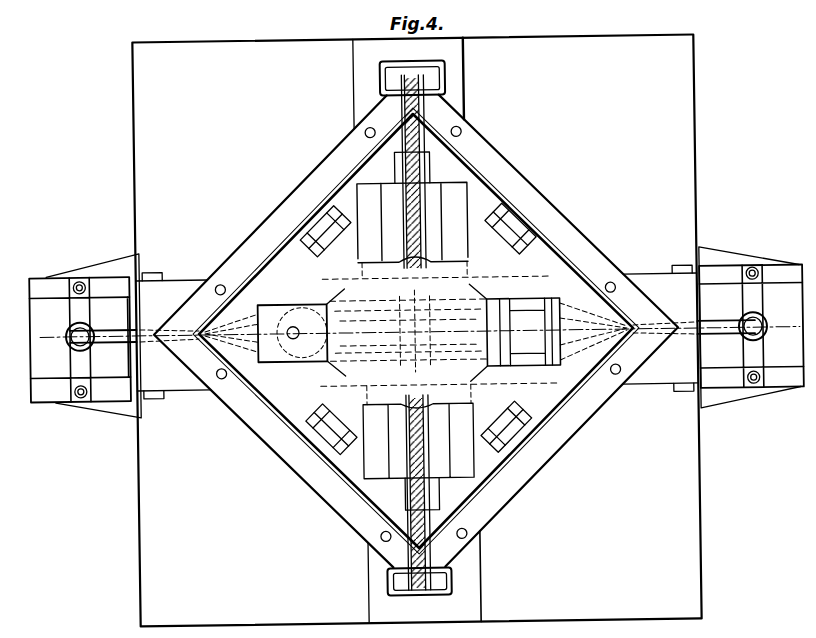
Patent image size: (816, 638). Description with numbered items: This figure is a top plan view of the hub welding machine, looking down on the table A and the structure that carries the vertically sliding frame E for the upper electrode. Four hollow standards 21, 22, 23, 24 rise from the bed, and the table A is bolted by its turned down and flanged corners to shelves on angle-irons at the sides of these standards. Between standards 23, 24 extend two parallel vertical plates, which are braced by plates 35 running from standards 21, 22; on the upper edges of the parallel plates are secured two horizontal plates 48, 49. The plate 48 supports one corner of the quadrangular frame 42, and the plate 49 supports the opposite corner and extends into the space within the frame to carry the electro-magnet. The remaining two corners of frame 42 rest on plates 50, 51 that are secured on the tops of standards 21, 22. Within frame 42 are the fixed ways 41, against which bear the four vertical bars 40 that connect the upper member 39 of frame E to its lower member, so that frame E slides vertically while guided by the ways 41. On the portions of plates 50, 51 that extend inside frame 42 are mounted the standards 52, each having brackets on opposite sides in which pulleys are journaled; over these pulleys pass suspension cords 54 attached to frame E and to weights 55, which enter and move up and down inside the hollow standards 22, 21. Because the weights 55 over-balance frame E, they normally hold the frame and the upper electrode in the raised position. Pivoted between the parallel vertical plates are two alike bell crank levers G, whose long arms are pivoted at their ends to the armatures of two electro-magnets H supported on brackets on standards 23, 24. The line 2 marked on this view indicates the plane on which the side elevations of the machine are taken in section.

The hollow standard 21 is at (393, 84).
The hollow standard 22 is at (480, 591).
The hollow standard 23 is at (52, 272).
The hollow standard 24 is at (766, 266).
The bracing plates 35 is at (505, 178).
The upper member 39 is at (576, 237).
The vertical bars 40 is at (536, 210).
The fixed ways 41 is at (291, 303).
The quadrangular frame 42 is at (563, 448).
The horizontal plate 48 is at (711, 328).
The horizontal plate 49 is at (128, 336).
The plate 50 is at (455, 152).
The plate 51 is at (419, 447).
The standards 52 is at (404, 496).
The suspension cords 54 is at (449, 84).
The weights 55 is at (396, 585).
The table A is at (643, 485).
The vertically sliding frame E is at (280, 300).
The bell crank levers G is at (417, 308).
The electro-magnets H is at (416, 335).
The section line 2 is at (786, 404).